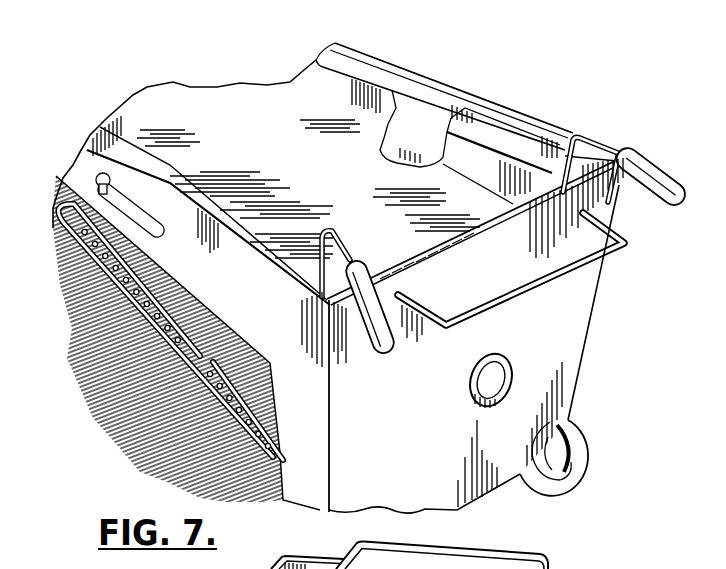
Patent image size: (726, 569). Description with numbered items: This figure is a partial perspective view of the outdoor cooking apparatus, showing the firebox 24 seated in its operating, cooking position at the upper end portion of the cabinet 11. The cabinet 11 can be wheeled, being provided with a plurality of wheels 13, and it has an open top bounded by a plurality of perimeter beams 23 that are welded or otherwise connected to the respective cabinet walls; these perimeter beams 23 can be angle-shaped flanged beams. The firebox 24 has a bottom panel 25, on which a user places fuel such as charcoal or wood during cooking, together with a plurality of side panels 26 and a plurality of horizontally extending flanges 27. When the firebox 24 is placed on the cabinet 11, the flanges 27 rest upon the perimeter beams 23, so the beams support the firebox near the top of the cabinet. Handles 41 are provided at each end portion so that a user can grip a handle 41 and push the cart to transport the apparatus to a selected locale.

The cabinet 11 is at (571, 343).
The wheels 13 is at (573, 452).
The perimeter beams 23 is at (427, 130).
The firebox 24 is at (367, 127).
The bottom panel 25 is at (312, 172).
The side panels 26 is at (333, 92).
The horizontally extending flanges 27 is at (520, 150).
The handles 41 is at (556, 278).